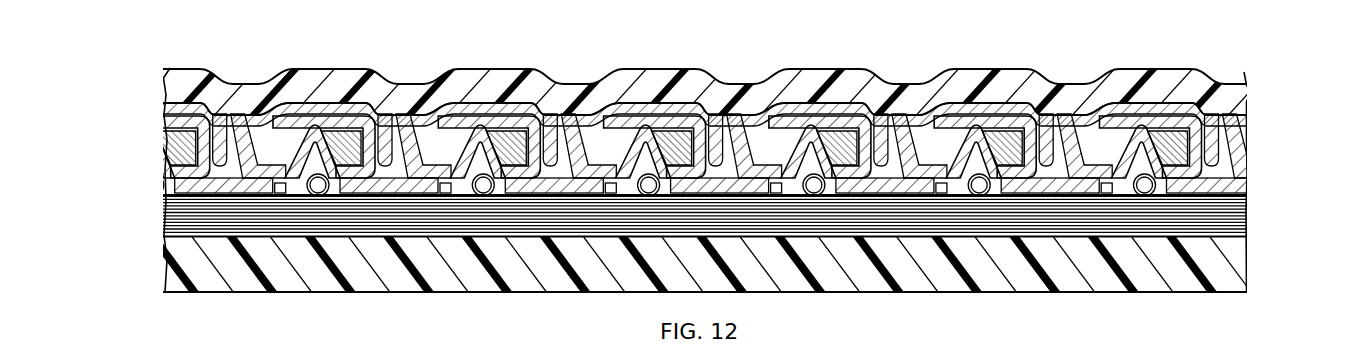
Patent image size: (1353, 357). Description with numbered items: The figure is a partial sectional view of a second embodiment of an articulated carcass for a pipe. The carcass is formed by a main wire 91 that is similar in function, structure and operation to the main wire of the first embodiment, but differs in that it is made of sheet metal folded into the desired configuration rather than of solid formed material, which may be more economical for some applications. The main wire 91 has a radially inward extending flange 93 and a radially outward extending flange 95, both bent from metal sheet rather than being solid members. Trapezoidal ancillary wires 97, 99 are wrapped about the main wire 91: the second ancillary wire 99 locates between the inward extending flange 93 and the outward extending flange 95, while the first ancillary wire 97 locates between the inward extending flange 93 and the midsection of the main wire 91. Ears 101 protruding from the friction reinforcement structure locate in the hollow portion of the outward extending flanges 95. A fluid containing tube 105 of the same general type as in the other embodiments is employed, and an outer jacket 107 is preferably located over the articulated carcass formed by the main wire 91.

The main wire 91 is at (707, 170).
The radially inward extending flange 93 is at (720, 113).
The radially outward extending flange 95 is at (642, 153).
The first ancillary wire 97 is at (583, 120).
The second ancillary wire 99 is at (510, 140).
The ears 101 is at (814, 188).
The fluid containing tube 105 is at (283, 273).
The outer jacket 107 is at (347, 85).